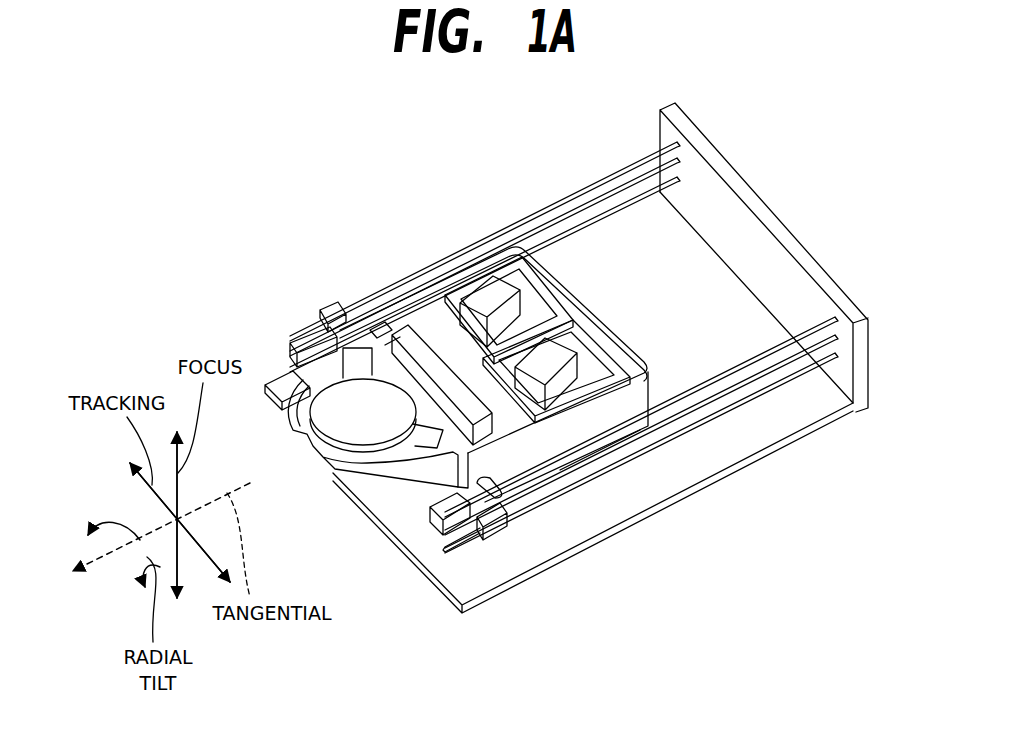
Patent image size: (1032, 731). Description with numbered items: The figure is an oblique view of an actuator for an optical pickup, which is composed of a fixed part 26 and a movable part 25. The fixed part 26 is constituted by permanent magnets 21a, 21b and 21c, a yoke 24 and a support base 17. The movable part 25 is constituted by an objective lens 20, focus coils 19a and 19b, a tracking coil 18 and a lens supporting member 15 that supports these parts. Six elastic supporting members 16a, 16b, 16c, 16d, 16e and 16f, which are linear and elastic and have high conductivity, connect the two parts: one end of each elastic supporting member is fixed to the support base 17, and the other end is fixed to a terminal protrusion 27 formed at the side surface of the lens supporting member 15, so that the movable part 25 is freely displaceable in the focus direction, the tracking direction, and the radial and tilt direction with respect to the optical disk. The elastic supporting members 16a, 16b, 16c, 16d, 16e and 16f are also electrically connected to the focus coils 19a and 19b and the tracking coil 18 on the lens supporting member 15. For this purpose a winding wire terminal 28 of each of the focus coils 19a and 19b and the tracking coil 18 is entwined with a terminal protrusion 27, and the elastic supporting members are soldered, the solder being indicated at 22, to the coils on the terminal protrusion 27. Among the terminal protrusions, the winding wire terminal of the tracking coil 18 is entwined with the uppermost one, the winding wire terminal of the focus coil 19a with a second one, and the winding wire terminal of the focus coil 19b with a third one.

The lens supporting member 15 is at (437, 467).
The elastic supporting member 16a is at (566, 196).
The elastic supporting member 16b is at (630, 182).
The elastic supporting member 16c is at (653, 197).
The elastic supporting member 16d is at (693, 388).
The elastic supporting member 16e is at (790, 358).
The elastic supporting member 16f is at (808, 366).
The support base 17 is at (780, 222).
The tracking coil 18 is at (442, 330).
The focus coil 19a is at (542, 288).
The focus coil 19b is at (603, 357).
The objective lens 20 is at (357, 420).
The permanent magnet 21a is at (400, 337).
The permanent magnet 21b is at (479, 297).
The permanent magnet 21c is at (660, 462).
The solder 22 is at (292, 343).
The yoke 24 is at (383, 355).
The movable part 25 is at (347, 322).
The fixed part 26 is at (730, 449).
The terminal protrusion 27 is at (432, 516).
The winding wire terminal 28 is at (545, 461).